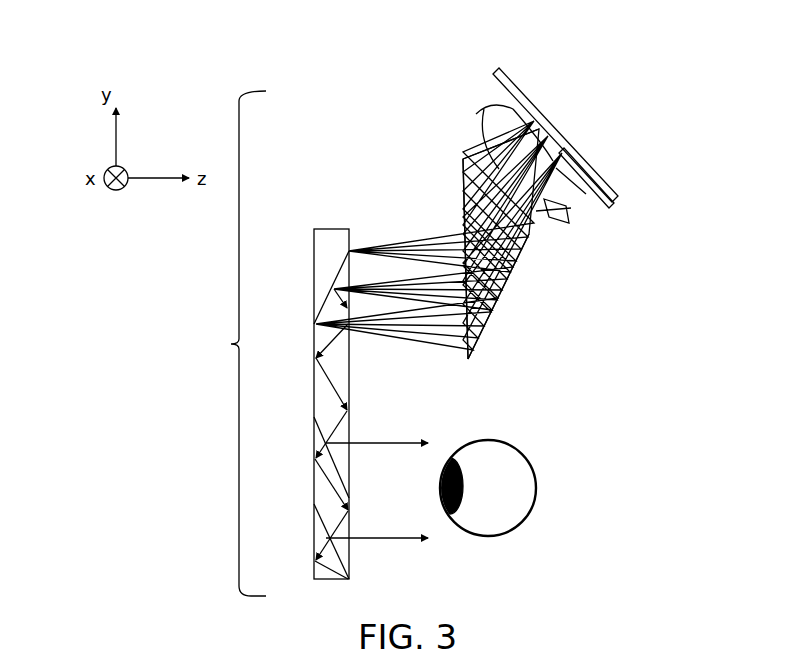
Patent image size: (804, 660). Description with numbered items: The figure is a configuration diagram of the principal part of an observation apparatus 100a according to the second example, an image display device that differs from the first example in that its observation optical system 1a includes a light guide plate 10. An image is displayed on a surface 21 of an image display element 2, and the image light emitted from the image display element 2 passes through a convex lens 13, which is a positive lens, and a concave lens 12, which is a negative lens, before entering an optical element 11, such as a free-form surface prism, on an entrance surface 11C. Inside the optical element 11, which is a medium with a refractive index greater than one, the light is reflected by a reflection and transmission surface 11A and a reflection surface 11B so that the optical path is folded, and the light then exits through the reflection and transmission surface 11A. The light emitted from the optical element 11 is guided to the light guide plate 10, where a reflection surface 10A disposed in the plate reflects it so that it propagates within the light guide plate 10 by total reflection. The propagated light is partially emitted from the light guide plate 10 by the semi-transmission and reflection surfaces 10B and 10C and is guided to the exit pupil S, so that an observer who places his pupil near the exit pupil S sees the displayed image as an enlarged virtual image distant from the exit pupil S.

The observation apparatus 100a is at (742, 50).
The observation optical system 1a is at (230, 343).
The image display element 2 is at (519, 86).
The surface 21 is at (577, 153).
The light guide plate 10 is at (318, 228).
The reflection surface 10A is at (312, 300).
The reflection surface 10B is at (316, 424).
The reflection surface 10C is at (316, 508).
The optical element 11 is at (540, 268).
The reflection and transmission surface 11A is at (460, 205).
The reflection surface 11B is at (512, 290).
The entrance surface 11C is at (468, 143).
The concave lens 12 is at (588, 250).
The convex lens 13 is at (590, 220).
The exit pupil S is at (428, 436).